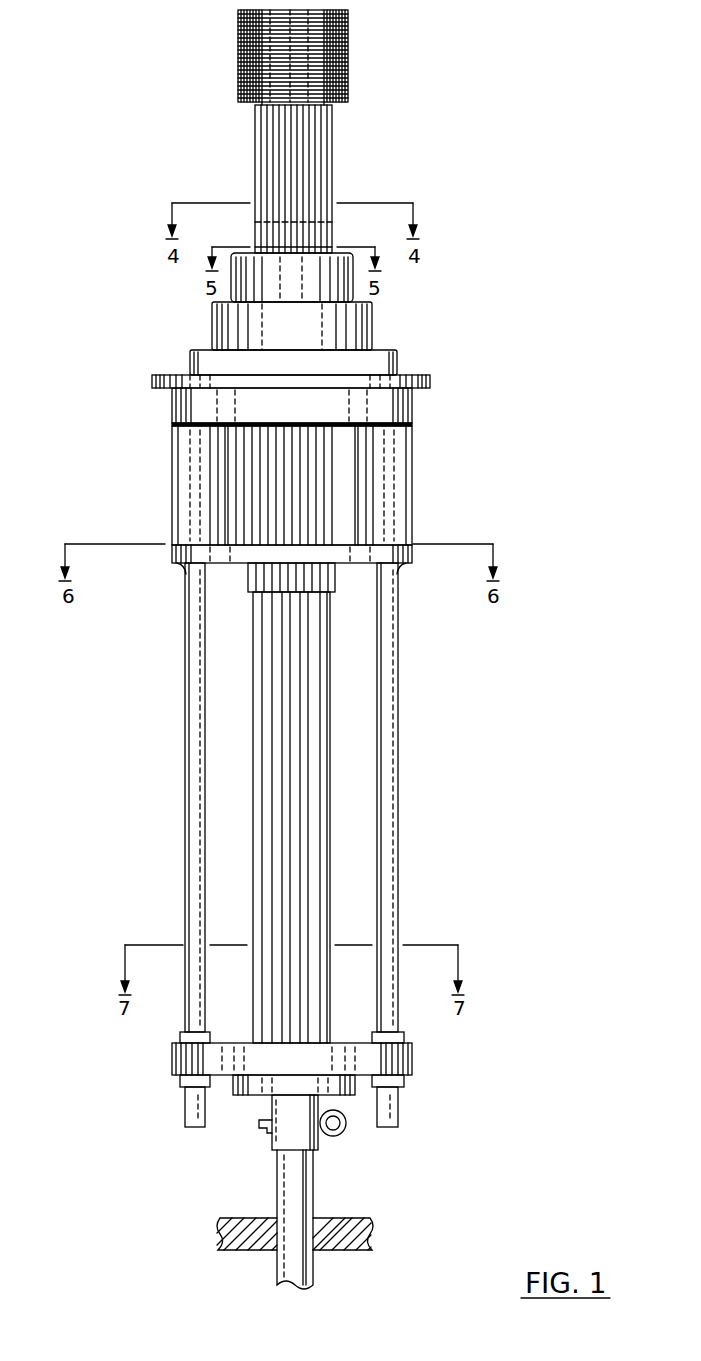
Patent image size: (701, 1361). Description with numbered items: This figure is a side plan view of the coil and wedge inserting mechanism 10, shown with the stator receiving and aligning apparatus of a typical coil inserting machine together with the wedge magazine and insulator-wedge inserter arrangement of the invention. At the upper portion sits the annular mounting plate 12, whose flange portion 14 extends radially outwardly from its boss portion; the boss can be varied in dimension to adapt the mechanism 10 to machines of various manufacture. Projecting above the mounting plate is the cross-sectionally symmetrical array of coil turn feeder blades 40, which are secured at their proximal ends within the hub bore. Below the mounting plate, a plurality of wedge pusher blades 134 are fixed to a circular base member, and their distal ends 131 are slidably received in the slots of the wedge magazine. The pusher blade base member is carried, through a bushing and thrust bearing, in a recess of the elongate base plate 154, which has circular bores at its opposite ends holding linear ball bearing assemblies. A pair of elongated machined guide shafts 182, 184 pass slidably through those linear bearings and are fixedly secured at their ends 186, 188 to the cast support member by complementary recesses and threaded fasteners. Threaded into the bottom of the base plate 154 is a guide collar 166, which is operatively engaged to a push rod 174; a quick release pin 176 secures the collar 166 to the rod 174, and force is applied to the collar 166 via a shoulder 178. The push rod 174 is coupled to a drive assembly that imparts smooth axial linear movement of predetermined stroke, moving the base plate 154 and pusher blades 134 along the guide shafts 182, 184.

The mechanism 10 is at (299, 649).
The annular mounting plate 12 is at (430, 381).
The flange portion 14 is at (422, 389).
The coil turn feeder blades 40 is at (330, 180).
The distal ends of the pusher blades 131 is at (325, 597).
The wedge pusher blades 134 is at (325, 857).
The base plate 154 is at (412, 1057).
The guide collar 166 is at (287, 1133).
The push rod 174 is at (308, 1180).
The quick release pin 176 is at (345, 1128).
The shoulder 178 is at (270, 1152).
The guide shaft 182 is at (395, 787).
The guide shaft 184 is at (193, 797).
The end of guide shaft 186 is at (390, 570).
The end of guide shaft 188 is at (180, 575).